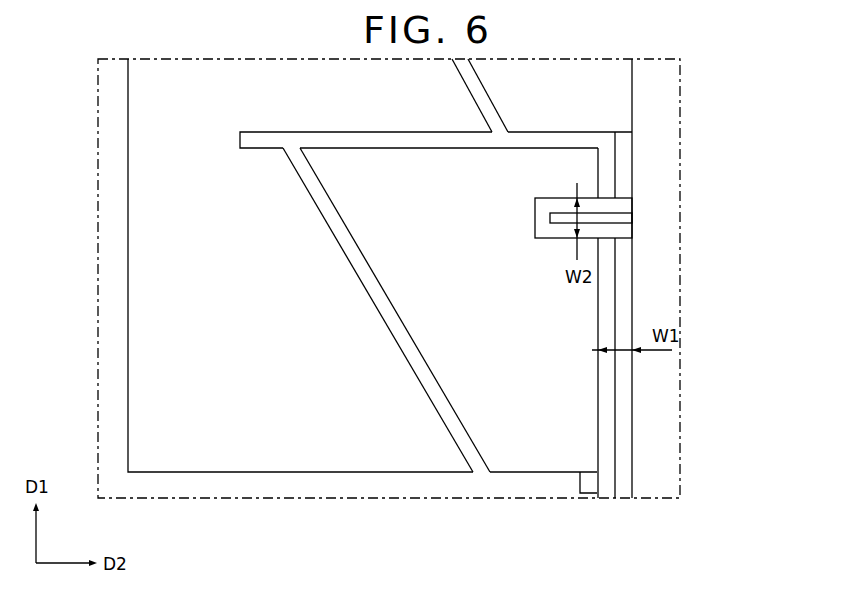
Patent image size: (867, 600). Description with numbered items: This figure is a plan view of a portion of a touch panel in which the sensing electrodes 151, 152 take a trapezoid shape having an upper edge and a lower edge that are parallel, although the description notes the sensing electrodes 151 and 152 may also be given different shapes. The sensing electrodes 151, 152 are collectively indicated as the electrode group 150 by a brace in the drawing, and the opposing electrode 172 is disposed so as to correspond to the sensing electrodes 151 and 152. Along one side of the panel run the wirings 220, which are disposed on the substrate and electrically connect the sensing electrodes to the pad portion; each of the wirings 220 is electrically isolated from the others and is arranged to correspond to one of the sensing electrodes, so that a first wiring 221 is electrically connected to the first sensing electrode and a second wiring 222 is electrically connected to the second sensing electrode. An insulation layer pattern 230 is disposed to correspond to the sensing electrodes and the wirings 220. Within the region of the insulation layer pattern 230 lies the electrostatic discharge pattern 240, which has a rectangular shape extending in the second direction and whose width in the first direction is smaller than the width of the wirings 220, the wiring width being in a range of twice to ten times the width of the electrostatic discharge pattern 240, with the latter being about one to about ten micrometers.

The encapsulation layer 150 is at (447, 278).
The sensing electrode 151 is at (608, 100).
The sensing electrode 152 is at (585, 158).
The opposing electrode 172 is at (142, 198).
The wirings 220 is at (605, 326).
The first wiring 221 is at (622, 490).
The second wiring 222 is at (588, 490).
The insulation layer pattern 230 is at (535, 199).
The electrostatic discharge pattern 240 is at (558, 223).